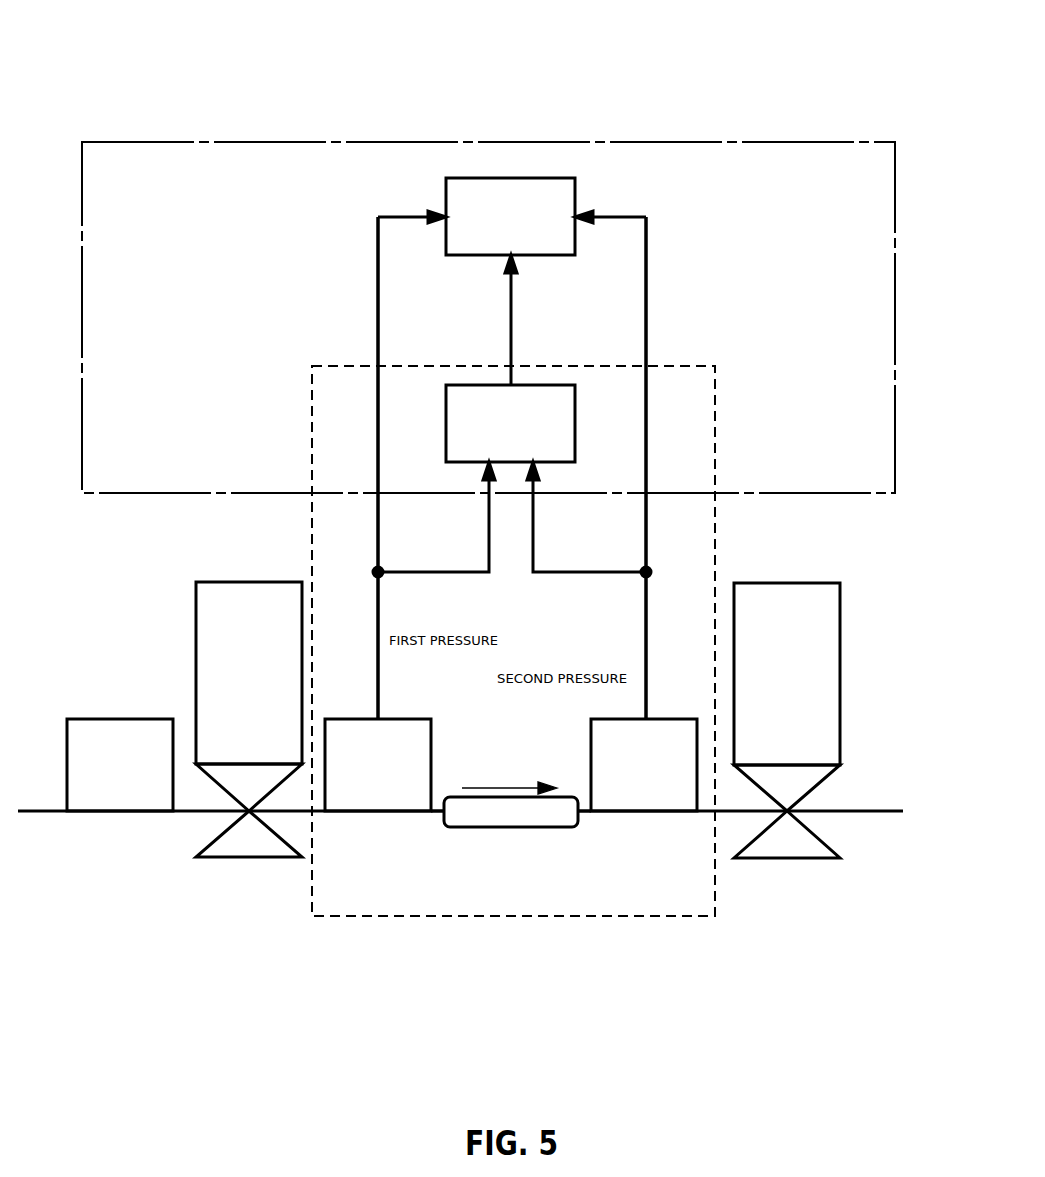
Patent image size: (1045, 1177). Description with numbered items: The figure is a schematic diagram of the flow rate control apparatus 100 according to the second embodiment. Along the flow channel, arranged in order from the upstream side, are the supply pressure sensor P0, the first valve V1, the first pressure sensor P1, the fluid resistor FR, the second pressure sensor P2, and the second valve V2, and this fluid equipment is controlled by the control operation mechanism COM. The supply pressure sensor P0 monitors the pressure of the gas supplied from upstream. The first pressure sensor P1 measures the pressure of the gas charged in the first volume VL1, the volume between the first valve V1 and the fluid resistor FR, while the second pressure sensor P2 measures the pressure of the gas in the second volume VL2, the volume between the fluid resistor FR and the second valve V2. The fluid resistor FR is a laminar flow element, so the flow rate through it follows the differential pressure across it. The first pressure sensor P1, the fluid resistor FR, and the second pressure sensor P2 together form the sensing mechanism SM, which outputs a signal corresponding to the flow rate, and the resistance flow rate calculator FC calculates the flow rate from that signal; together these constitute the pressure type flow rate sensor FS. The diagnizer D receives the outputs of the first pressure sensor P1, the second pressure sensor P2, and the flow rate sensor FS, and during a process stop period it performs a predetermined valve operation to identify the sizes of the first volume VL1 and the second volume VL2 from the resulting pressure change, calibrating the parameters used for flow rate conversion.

The flow rate control apparatus 100 is at (691, 92).
The control operation mechanism COM is at (577, 141).
The diagnizer D is at (460, 177).
The resistance flow rate calculator FC is at (542, 384).
The flow rate sensor FS is at (690, 365).
The supply pressure sensor P0 is at (93, 718).
The first pressure sensor P1 is at (358, 718).
The second pressure sensor P2 is at (665, 718).
The first valve V1 is at (215, 581).
The second valve V2 is at (842, 592).
The first volume VL1 is at (380, 813).
The second volume VL2 is at (645, 813).
The fluid resistor FR is at (511, 829).
The sensing mechanism SM is at (540, 864).